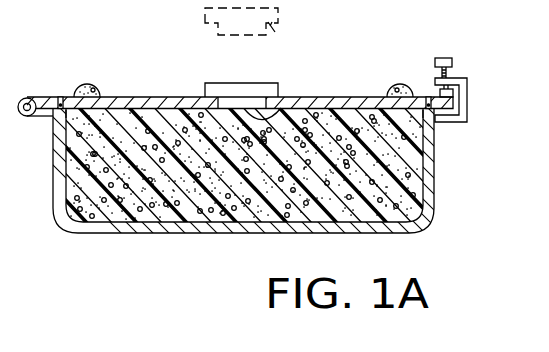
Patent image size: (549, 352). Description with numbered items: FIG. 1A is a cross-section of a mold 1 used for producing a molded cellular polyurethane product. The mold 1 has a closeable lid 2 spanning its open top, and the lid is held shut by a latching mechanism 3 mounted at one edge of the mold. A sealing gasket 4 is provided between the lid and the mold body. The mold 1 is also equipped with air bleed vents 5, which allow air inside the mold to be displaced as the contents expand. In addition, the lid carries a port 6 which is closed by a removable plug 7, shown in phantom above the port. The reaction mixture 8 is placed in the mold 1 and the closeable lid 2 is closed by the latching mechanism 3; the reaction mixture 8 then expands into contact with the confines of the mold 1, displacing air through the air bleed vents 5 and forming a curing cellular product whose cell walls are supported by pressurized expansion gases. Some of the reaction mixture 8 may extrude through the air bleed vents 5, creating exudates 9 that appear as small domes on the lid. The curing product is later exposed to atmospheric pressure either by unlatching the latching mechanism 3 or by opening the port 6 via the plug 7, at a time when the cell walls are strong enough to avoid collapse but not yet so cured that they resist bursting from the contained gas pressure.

The mold 1 is at (434, 175).
The closeable lid 2 is at (335, 97).
The latching mechanism 3 is at (467, 102).
The sealing gasket 4 is at (60, 98).
The air bleed vents 5 is at (68, 122).
The port 6 is at (281, 107).
The removable plug 7 is at (258, 83).
The reaction mixture 8 is at (98, 208).
The exudates 9 is at (88, 85).